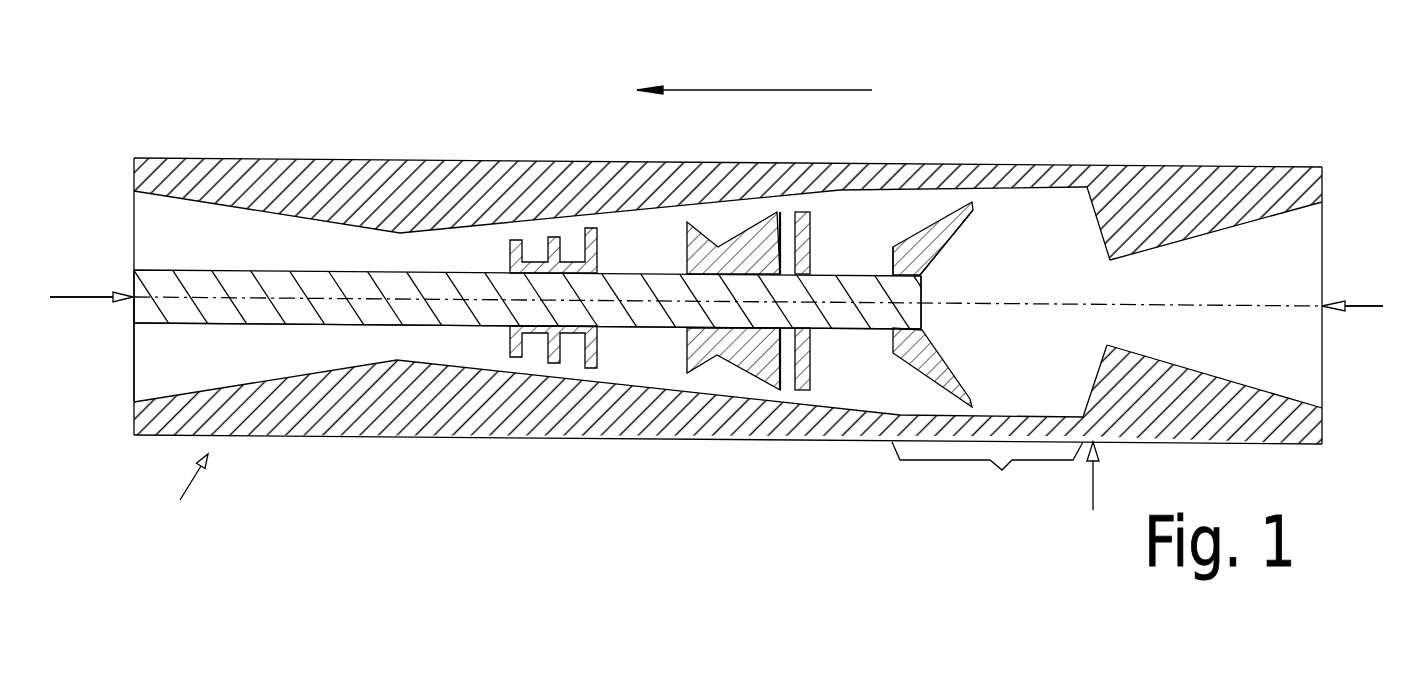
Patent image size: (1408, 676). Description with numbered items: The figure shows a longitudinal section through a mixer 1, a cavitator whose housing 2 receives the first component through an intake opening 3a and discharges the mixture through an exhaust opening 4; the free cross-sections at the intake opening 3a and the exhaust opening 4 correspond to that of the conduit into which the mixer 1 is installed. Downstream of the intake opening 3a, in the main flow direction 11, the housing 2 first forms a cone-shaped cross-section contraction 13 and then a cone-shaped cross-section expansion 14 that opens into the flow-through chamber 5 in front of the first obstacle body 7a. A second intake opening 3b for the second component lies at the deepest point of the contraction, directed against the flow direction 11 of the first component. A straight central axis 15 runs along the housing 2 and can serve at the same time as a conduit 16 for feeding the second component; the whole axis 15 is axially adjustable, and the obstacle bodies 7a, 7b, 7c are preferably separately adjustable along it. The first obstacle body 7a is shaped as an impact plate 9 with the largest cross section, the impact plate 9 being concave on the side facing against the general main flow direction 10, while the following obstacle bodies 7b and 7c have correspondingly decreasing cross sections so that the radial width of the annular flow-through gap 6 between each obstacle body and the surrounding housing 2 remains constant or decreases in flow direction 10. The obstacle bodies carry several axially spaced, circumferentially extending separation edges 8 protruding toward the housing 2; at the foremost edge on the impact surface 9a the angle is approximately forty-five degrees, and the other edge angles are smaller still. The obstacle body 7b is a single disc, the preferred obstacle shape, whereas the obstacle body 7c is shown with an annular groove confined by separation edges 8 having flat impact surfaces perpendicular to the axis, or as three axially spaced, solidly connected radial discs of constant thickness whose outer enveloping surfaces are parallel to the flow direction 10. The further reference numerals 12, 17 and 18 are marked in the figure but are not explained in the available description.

The mixer 1 is at (189, 489).
The housing 2 is at (315, 180).
The intake opening 3a is at (1325, 252).
The second intake opening 3b is at (922, 312).
The exhaust opening 4 is at (133, 350).
The flow-through chamber 5 is at (1045, 348).
The annular flow-through gap 6 is at (748, 407).
The first obstacle body 7a is at (897, 248).
The obstacle body 7b is at (806, 211).
The obstacle body 7c is at (512, 260).
The separation edges 8 is at (779, 211).
The impact plate 9 is at (968, 200).
The impact surface 9a is at (942, 252).
The flow direction 10 is at (731, 90).
The main flow direction 11 is at (1363, 308).
The inlet 12 is at (72, 297).
The cone-shaped cross-section contraction 13 is at (1110, 272).
The cone-shaped cross-section expansion 14 is at (1077, 203).
The central axis 15 is at (257, 323).
The conduit 16 is at (262, 288).
The chamber section 17 is at (987, 476).
The housing wall section 18 is at (1094, 494).